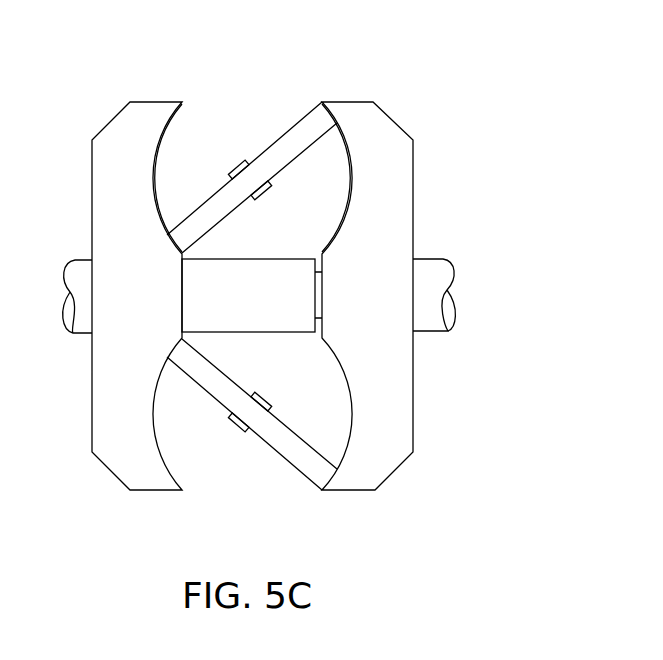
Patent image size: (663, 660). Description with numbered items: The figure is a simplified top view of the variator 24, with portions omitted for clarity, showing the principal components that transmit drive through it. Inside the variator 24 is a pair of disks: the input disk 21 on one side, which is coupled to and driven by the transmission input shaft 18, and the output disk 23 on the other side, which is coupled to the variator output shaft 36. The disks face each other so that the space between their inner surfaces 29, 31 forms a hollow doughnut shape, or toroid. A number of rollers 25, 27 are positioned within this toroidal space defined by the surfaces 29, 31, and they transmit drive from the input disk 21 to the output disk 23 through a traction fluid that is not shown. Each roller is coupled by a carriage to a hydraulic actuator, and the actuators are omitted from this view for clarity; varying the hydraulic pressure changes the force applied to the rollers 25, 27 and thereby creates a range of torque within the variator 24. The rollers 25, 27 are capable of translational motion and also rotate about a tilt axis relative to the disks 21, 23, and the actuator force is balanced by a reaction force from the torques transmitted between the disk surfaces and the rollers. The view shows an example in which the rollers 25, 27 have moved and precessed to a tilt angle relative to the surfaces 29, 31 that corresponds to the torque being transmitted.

The transmission input shaft 18 is at (77, 262).
The input disk 21 is at (117, 128).
The output disk 23 is at (388, 126).
The variator 24 is at (535, 31).
The roller 25 is at (292, 130).
The roller 27 is at (290, 461).
The inner surface 29 is at (197, 178).
The inner surface 31 is at (301, 178).
The variator output shaft 36 is at (430, 259).